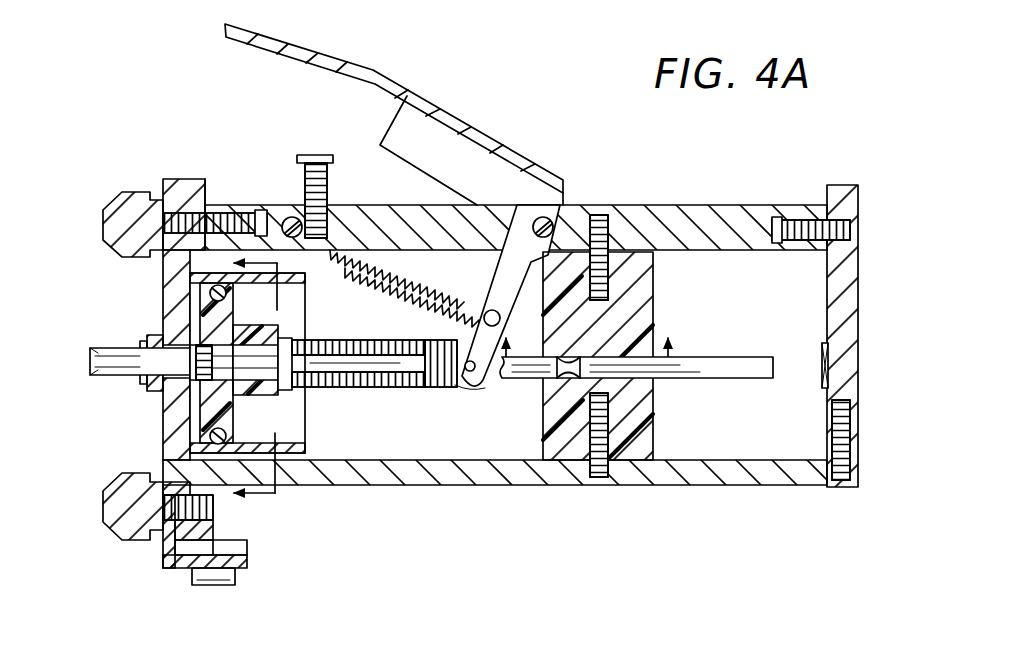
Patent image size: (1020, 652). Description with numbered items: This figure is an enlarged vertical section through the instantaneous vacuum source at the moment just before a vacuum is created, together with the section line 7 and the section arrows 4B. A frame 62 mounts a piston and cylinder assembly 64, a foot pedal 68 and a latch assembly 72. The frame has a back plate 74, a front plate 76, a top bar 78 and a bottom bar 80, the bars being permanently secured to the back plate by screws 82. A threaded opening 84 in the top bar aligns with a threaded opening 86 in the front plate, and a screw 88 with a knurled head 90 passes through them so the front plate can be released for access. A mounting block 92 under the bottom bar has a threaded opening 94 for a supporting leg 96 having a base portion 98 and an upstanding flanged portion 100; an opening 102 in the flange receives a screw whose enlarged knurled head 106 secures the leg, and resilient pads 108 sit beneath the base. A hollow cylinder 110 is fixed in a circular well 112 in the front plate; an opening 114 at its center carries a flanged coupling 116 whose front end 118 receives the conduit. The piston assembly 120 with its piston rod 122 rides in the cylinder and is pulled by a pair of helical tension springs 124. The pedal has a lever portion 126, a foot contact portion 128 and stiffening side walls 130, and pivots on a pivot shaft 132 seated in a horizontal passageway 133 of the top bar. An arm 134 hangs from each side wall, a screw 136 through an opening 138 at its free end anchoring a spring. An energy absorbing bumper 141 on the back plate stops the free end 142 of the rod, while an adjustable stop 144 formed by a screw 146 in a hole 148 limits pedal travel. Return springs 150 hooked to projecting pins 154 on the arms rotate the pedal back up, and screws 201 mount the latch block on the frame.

The frame 62 is at (736, 224).
The piston and cylinder assembly 64 is at (268, 306).
The foot pedal 68 is at (482, 128).
The latch assembly 72 is at (634, 458).
The back plate 74 is at (842, 192).
The front plate 76 is at (180, 187).
The top bar 78 is at (752, 224).
The bottom bar 80 is at (762, 476).
The screws 82 is at (848, 229).
The threaded opening 84 is at (231, 210).
The threaded opening 86 is at (205, 192).
The screw 88 is at (170, 214).
The knurled head 90 is at (110, 215).
The mounting block 92 is at (215, 530).
The threaded opening 94 is at (210, 505).
The supporting leg 96 is at (176, 549).
The base portion 98 is at (246, 563).
The upstanding flanged portion 100 is at (167, 551).
The opening 102 is at (168, 494).
The enlarged knurled head 106 is at (118, 494).
The resilient pads 108 is at (216, 590).
The hollow cylinder 110 is at (294, 452).
The circular well 112 is at (197, 293).
The opening 114 is at (176, 326).
The flanged coupling 116 is at (128, 380).
The front end 118 is at (90, 361).
The piston assembly 120 is at (273, 335).
The piston rod 122 is at (376, 386).
The helical tension springs 124 is at (414, 389).
The lever portion 126 is at (425, 101).
The foot contact portion 128 is at (268, 42).
The side walls 130 is at (508, 178).
The pivot shaft 132 is at (557, 216).
The horizontal passageway 133 is at (532, 224).
The arm 134 is at (477, 348).
The screw 136 is at (485, 382).
The opening 138 is at (476, 386).
The energy absorbing bumper 141 is at (830, 362).
The free end 142 is at (772, 368).
The adjustable stop 144 is at (310, 156).
The screw 146 is at (373, 138).
The hole 148 is at (338, 233).
The helical tension springs 150 is at (405, 272).
The projecting pin 154 is at (484, 321).
The screws 201 is at (601, 216).
The section line 7- 7 is at (255, 378).
The section line 4B- 4B is at (604, 335).